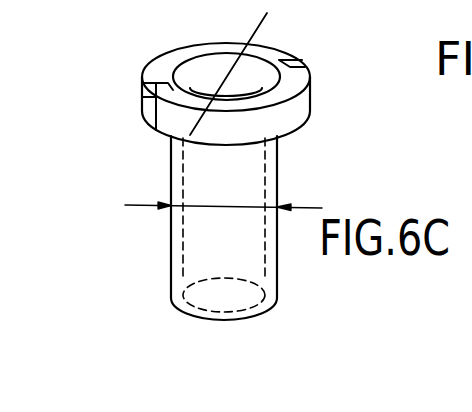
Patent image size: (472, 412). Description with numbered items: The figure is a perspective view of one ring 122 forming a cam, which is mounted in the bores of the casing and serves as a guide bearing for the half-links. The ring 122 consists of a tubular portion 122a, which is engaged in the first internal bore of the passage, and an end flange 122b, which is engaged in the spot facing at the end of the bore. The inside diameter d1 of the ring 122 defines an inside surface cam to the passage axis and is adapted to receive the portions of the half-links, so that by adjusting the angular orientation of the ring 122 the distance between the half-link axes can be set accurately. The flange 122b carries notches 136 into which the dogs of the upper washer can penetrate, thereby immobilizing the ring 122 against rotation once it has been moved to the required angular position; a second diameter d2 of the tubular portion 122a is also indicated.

The ring 122 is at (194, 169).
The tubular portion 122a is at (172, 273).
The end flange 122b is at (153, 67).
The notches 136 is at (305, 63).
The inside diameter d1 is at (229, 62).
The tube outer diameter d2 is at (213, 200).